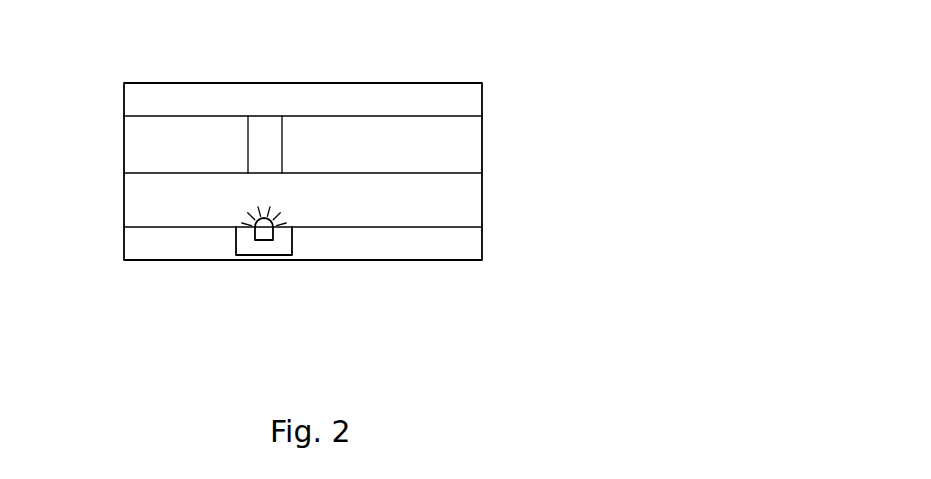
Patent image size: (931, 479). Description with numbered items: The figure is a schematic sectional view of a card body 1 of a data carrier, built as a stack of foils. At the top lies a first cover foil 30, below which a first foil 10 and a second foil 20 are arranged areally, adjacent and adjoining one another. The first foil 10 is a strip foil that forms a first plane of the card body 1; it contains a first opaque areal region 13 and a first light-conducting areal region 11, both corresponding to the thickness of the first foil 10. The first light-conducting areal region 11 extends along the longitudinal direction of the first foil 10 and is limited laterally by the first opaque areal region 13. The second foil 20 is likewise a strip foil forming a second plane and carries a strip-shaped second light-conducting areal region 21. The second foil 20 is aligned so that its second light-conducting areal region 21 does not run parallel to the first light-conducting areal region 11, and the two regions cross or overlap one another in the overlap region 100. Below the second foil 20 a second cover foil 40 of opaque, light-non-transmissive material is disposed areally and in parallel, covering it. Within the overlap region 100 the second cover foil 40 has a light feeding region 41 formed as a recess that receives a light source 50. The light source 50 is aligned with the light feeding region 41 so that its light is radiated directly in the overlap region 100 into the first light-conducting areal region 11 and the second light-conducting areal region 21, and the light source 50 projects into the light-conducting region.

The card body 1 is at (101, 58).
The first foil 10 is at (359, 89).
The first light-conducting areal region 11 is at (267, 143).
The first opaque areal region 13 is at (430, 128).
The first cover foil 30 is at (328, 95).
The second foil 20 is at (356, 255).
The second light-conducting areal region 21 is at (405, 200).
The second cover foil 40 is at (460, 245).
The light feeding region 41 is at (277, 253).
The light source 50 is at (253, 243).
The overlap region 100 is at (234, 172).